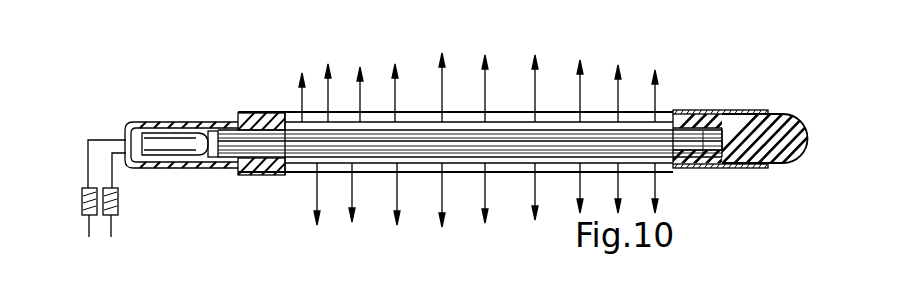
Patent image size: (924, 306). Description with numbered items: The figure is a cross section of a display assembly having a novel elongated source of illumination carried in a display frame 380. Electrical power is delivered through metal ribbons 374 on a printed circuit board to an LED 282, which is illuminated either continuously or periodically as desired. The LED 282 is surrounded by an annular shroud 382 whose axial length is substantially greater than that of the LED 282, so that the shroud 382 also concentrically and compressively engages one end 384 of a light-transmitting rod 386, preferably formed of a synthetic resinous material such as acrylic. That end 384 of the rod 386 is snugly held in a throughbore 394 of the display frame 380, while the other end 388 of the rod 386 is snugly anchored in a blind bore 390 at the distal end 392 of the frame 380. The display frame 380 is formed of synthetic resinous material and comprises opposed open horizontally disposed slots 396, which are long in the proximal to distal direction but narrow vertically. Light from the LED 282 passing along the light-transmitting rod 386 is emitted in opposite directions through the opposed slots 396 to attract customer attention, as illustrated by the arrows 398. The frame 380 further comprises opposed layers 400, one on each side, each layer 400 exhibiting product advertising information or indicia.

The LED 282 is at (182, 134).
The metal ribbons 374 is at (82, 208).
The display frame 380 is at (259, 134).
The annular shroud 382 is at (193, 120).
The end of light-transmitting rod 384 is at (231, 158).
The light-transmitting rod 386 is at (558, 141).
The other end of light-transmitting rod 388 is at (703, 156).
The blind bore 390 is at (728, 105).
The distal end 392 is at (783, 151).
The throughbore 394 is at (283, 147).
The slots 396 is at (377, 164).
The arrows 398 is at (441, 88).
The layers 400 is at (645, 110).